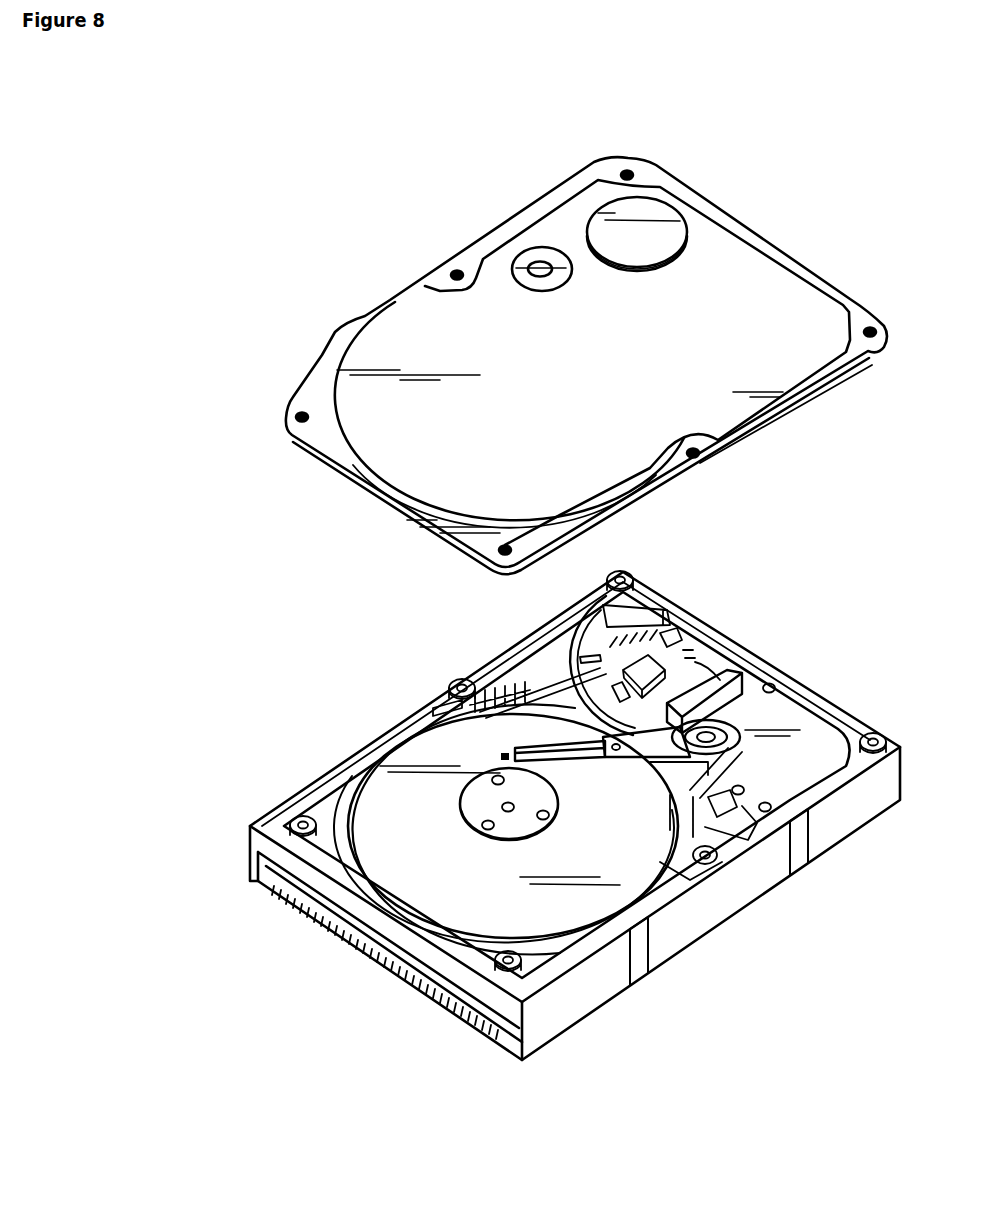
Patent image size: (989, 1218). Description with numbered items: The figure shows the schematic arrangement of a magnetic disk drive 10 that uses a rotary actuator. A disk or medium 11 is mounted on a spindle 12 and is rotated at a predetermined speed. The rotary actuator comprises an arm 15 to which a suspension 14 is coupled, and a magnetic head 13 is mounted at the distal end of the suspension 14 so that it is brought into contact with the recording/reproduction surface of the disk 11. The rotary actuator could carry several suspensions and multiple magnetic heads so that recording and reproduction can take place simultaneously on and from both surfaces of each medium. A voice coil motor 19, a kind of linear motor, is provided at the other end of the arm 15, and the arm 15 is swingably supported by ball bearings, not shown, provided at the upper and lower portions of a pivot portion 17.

The magnetic disk drive 10 is at (226, 1019).
The disk 11 is at (368, 797).
The spindle 12 is at (472, 822).
The magnetic head 13 is at (508, 757).
The suspension 14 is at (578, 760).
The arm 15 is at (625, 762).
The pivot portion 17 is at (742, 690).
The voice coil motor 19 is at (804, 716).